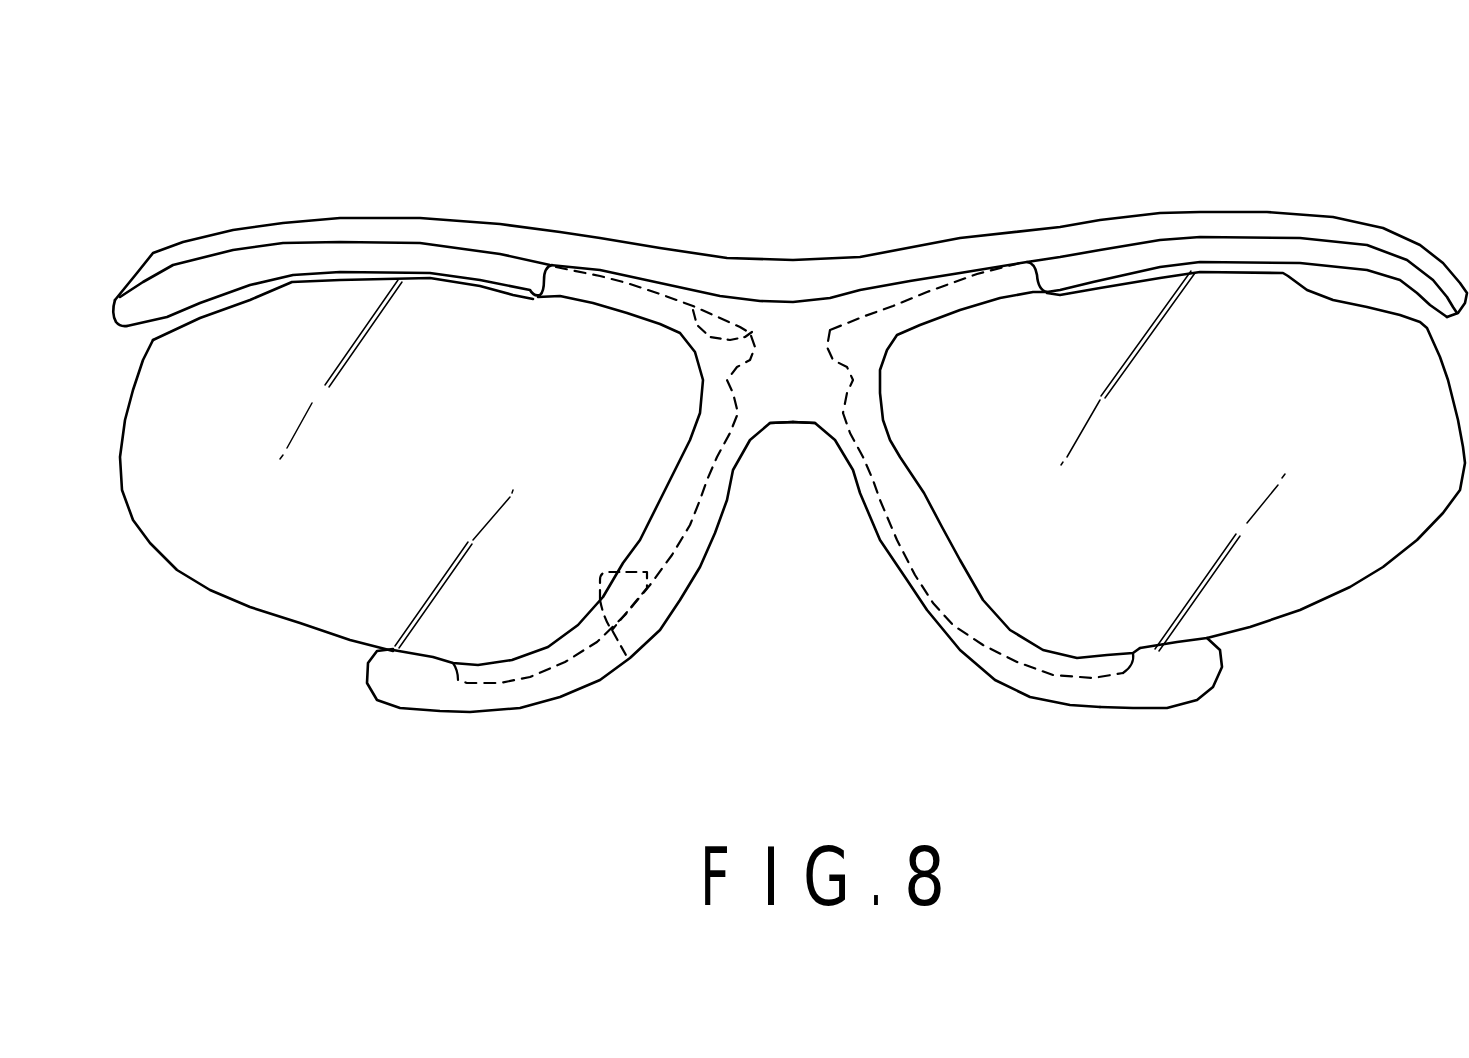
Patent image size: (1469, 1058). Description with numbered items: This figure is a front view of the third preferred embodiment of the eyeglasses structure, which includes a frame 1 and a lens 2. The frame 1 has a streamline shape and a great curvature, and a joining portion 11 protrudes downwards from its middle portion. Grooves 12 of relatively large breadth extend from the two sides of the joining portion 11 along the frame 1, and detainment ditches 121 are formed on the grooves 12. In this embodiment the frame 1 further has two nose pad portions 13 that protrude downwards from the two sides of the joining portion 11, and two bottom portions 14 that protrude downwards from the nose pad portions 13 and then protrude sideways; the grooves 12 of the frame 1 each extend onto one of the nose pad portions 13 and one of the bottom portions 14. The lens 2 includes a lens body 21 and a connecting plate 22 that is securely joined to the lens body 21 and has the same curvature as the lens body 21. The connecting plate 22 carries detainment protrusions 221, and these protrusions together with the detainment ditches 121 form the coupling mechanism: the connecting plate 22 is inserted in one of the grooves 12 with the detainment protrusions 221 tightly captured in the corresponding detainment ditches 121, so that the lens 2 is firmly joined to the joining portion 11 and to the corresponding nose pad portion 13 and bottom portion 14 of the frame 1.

The frame 1 is at (1277, 227).
The joining portion 11 is at (785, 405).
The grooves 12 is at (627, 655).
The detainment ditches 121 is at (688, 295).
The nose pad portions 13 is at (978, 658).
The bottom portions 14 is at (1172, 675).
The lens 2 is at (240, 650).
The lens body 21 is at (1292, 583).
The connecting plate 22 is at (983, 287).
The detainment protrusions 221 is at (860, 353).